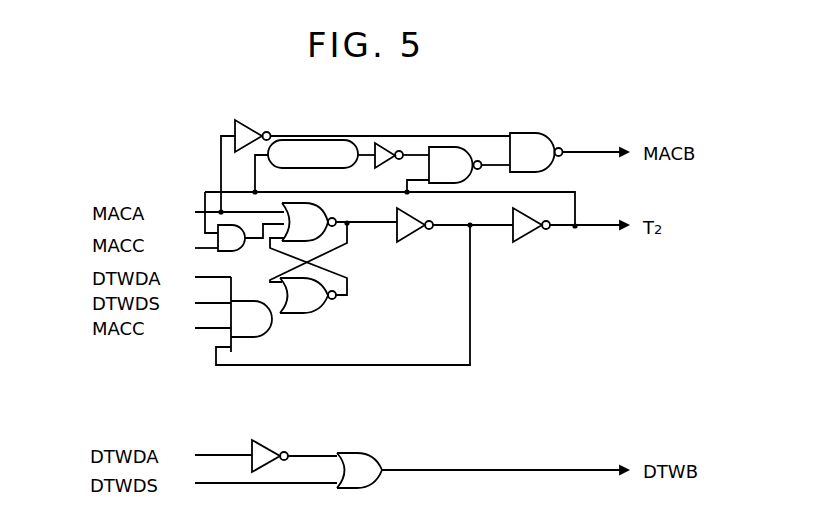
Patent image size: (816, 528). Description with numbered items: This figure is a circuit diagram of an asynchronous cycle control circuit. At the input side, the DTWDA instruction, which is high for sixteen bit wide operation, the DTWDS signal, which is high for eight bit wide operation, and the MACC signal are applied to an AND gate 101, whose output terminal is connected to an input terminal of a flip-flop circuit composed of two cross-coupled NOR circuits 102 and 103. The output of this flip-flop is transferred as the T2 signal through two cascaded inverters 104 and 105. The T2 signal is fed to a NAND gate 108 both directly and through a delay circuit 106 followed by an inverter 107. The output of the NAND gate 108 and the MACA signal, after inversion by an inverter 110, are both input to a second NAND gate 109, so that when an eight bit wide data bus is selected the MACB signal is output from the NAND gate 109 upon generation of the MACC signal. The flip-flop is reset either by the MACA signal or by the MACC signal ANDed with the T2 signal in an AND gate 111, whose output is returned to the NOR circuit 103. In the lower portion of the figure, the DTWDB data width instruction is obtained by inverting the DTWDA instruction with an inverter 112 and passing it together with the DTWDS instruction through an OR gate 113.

The AND gate 101 is at (258, 337).
The NOR circuit 102 is at (336, 297).
The NOR circuit 103 is at (330, 240).
The inverter 104 is at (408, 234).
The inverter 105 is at (522, 234).
The delay circuit 106 is at (341, 139).
The inverter 107 is at (389, 142).
The NAND gate 108 is at (455, 146).
The NAND gate 109 is at (547, 132).
The inverter 110 is at (248, 121).
The AND gate 111 is at (228, 251).
The inverter 112 is at (265, 440).
The OR gate 113 is at (366, 452).